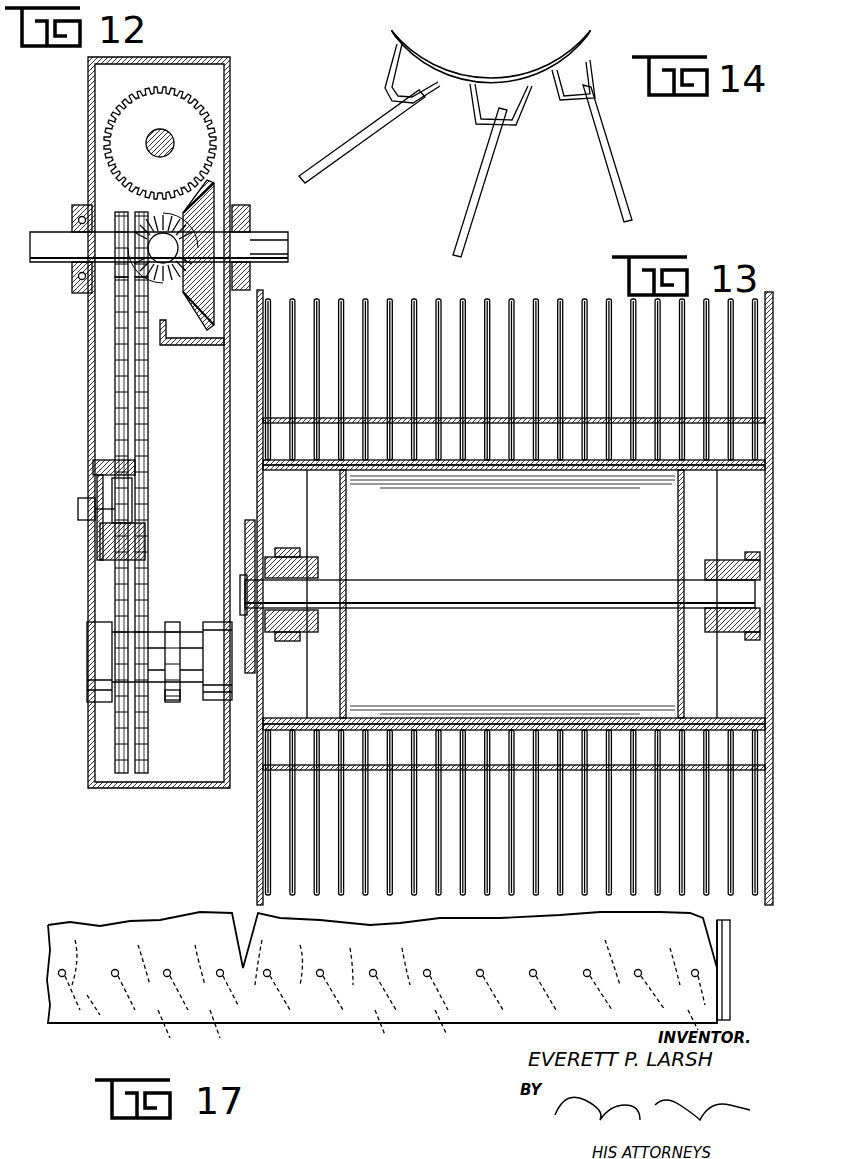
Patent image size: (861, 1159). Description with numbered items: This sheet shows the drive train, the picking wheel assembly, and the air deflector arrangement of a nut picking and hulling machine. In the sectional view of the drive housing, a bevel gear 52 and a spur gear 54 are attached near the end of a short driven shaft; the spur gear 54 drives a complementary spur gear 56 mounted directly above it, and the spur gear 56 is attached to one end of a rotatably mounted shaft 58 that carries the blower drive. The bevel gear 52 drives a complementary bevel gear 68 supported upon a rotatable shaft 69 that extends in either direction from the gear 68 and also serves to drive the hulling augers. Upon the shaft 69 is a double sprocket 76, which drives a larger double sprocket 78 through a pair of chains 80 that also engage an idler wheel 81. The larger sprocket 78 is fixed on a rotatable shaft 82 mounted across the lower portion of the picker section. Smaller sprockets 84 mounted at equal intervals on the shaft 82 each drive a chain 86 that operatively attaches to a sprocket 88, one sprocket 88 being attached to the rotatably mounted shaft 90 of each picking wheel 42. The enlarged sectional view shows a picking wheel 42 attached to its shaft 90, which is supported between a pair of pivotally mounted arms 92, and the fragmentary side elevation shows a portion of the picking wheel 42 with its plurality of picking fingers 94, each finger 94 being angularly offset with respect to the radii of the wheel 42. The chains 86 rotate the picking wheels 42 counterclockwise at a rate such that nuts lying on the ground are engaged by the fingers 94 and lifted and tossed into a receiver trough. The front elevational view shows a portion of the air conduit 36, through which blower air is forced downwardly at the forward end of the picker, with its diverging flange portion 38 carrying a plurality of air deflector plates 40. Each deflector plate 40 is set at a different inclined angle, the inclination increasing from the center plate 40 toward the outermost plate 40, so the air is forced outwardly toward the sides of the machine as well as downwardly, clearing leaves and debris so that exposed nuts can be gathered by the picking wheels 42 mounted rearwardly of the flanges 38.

In FIG. 17, the air conduit 36 is at (146, 934).
In FIG. 17, the diverging flange portion 38 is at (700, 944).
In FIG. 17, the air deflector plates 40 is at (75, 1005).
In FIG. 14, the picking wheels 42 is at (524, 78).
In FIG. 13, the picking wheels 42 is at (708, 548).
In FIG. 12, the bevel gear 52 is at (163, 283).
In FIG. 12, the spur gear 54 is at (146, 206).
In FIG. 12, the spur gear 56 is at (190, 108).
In FIG. 12, the shaft 58 is at (157, 137).
In FIG. 12, the bevel gear 68 is at (203, 330).
In FIG. 12, the shaft 69 is at (268, 240).
In FIG. 12, the double sprocket 76 is at (110, 244).
In FIG. 12, the double sprocket 78 is at (120, 735).
In FIG. 12, the chains 80 is at (115, 362).
In FIG. 12, the idler wheel 81 is at (140, 530).
In FIG. 12, the shaft 82 is at (186, 640).
In FIG. 12, the sprockets 84 is at (173, 622).
In FIG. 12, the chain 86 is at (173, 697).
In FIG. 12, the sprocket 88 is at (248, 673).
In FIG. 13, the shaft 90 is at (510, 580).
In FIG. 13, the pivotally mounted arms 92 is at (257, 830).
In FIG. 14, the picking fingers 94 is at (478, 205).
In FIG. 13, the picking fingers 94 is at (558, 302).